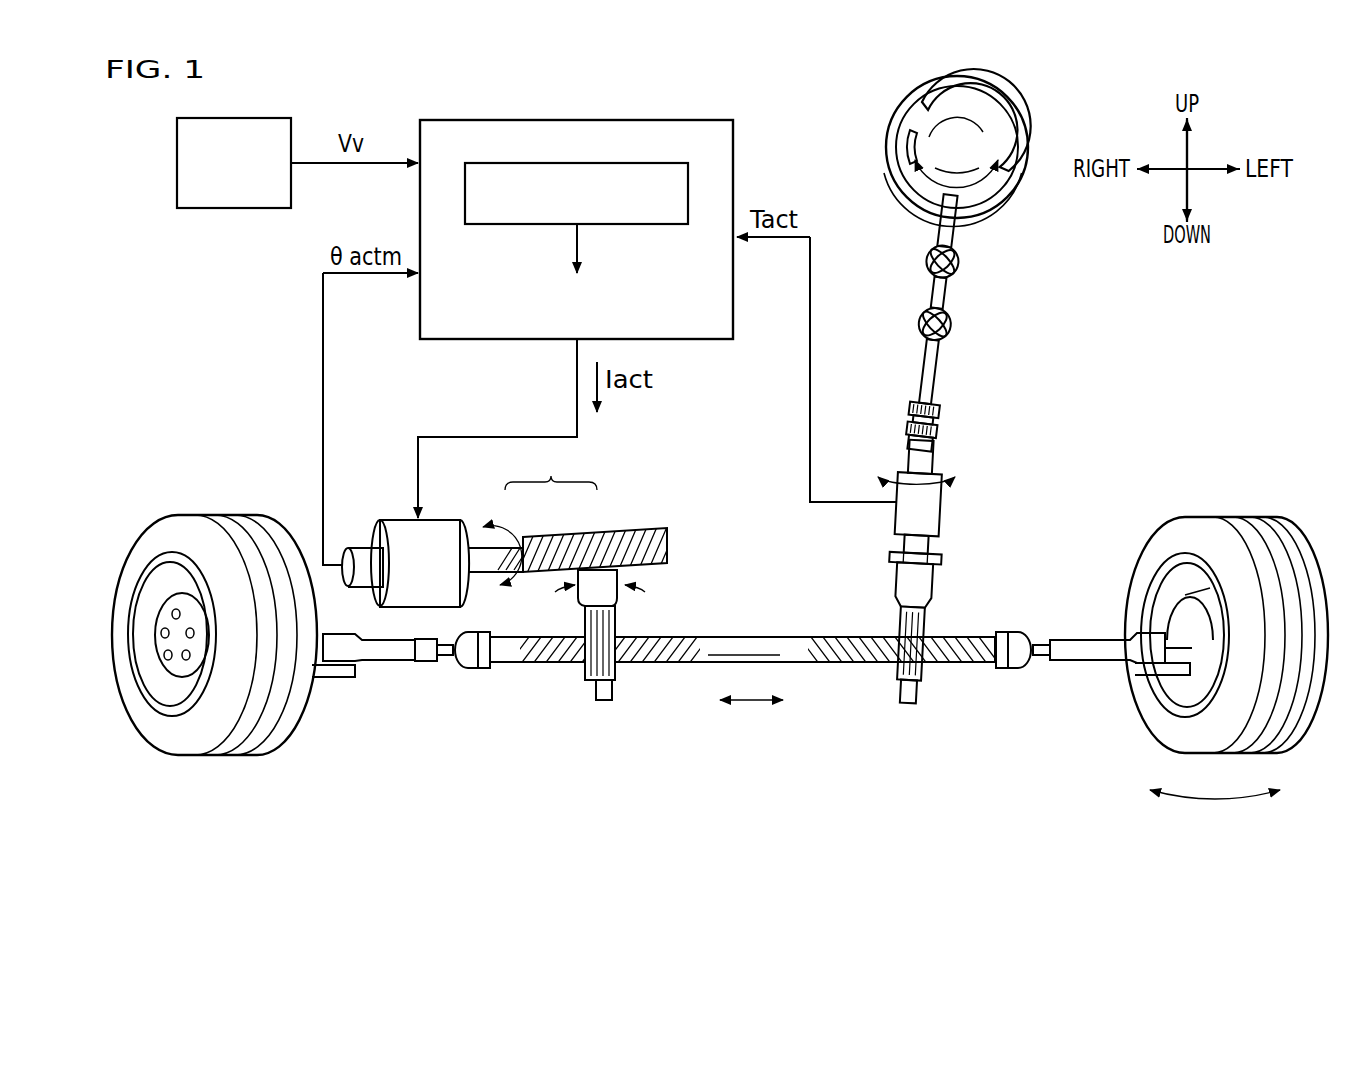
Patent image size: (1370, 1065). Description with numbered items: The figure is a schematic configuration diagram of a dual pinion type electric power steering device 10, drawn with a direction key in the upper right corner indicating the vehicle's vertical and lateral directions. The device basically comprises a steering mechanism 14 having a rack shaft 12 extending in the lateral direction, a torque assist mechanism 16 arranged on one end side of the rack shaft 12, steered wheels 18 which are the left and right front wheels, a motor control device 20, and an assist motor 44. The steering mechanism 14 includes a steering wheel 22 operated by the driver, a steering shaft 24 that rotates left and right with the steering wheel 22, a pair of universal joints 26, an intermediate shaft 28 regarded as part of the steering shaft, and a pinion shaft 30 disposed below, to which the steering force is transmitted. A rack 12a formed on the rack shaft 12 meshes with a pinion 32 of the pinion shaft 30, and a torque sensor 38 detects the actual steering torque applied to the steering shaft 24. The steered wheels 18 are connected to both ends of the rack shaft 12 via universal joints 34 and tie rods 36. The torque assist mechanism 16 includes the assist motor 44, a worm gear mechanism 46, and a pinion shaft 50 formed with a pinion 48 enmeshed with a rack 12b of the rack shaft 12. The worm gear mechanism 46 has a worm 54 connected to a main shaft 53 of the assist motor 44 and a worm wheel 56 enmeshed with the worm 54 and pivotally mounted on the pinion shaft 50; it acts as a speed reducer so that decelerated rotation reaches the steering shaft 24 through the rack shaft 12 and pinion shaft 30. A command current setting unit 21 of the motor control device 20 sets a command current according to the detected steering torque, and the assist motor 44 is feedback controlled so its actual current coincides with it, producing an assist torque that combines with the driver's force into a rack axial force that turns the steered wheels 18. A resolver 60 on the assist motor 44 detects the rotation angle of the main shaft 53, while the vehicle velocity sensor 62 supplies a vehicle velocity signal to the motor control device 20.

The electric power steering device 10 is at (501, 91).
The rack shaft 12 is at (738, 694).
The rack 12a is at (828, 665).
The rack 12b is at (552, 665).
The steering mechanism 14 is at (1000, 382).
The torque assist mechanism 16 is at (612, 500).
The steered wheels 18 is at (203, 515).
The motor control device 20 is at (651, 203).
The command current setting unit 21 is at (501, 224).
The steering wheel 22 is at (970, 80).
The steering shaft 24 is at (936, 233).
The universal joints 26 is at (953, 318).
The intermediate shaft 28 is at (919, 375).
The pinion shaft 30 is at (932, 595).
The pinion 32 is at (915, 675).
The universal joints 34 is at (468, 670).
The tie rods 36 is at (380, 661).
The torque sensor 38 is at (940, 517).
The assist motor 44 is at (410, 520).
The worm gear mechanism 46 is at (589, 512).
The pinion 48 is at (590, 683).
The pinion shaft 50 is at (620, 601).
The main shaft 53 is at (458, 540).
The worm 54 is at (513, 540).
The worm wheel 56 is at (612, 530).
The resolver 60 is at (362, 553).
The vehicle velocity sensor 62 is at (177, 161).